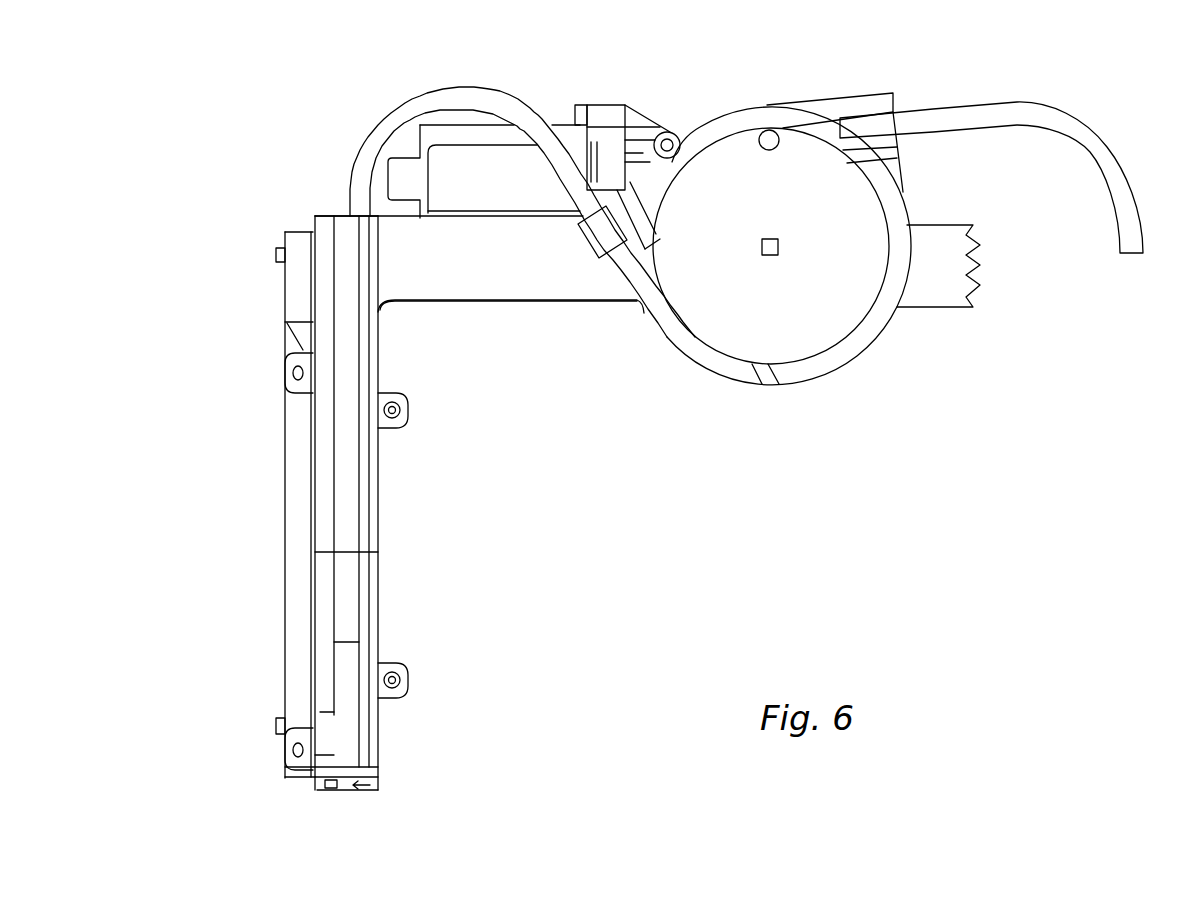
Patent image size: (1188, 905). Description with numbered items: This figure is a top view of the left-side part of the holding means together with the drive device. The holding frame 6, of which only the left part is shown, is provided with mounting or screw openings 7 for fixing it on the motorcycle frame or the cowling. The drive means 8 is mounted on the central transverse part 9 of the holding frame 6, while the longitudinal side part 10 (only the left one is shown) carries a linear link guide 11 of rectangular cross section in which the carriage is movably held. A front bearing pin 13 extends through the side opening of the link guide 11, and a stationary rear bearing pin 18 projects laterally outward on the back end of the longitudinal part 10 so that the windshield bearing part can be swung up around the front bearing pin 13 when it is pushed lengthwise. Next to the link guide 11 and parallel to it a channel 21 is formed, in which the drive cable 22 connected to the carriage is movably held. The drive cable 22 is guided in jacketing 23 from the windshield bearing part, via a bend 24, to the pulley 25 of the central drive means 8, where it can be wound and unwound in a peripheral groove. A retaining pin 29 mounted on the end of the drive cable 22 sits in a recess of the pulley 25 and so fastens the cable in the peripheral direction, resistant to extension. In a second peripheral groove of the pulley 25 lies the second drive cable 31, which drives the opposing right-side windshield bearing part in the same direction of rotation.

The holding frame 6 is at (480, 316).
The mounting or screw openings 7 is at (405, 410).
The drive means 8 is at (687, 110).
The central transverse part 9 is at (587, 280).
The longitudinal side part 10 is at (382, 533).
The linear link guide 11 is at (331, 792).
The front bearing pin 13 is at (278, 253).
The rear bearing pin 18 is at (272, 736).
The channel 21 is at (360, 792).
The drive cable 22 is at (648, 270).
The jacketing 23 is at (372, 165).
The bend 24 is at (442, 96).
The pulley 25 is at (823, 307).
The retaining pin 29 is at (766, 130).
The second drive cable 31 is at (826, 135).